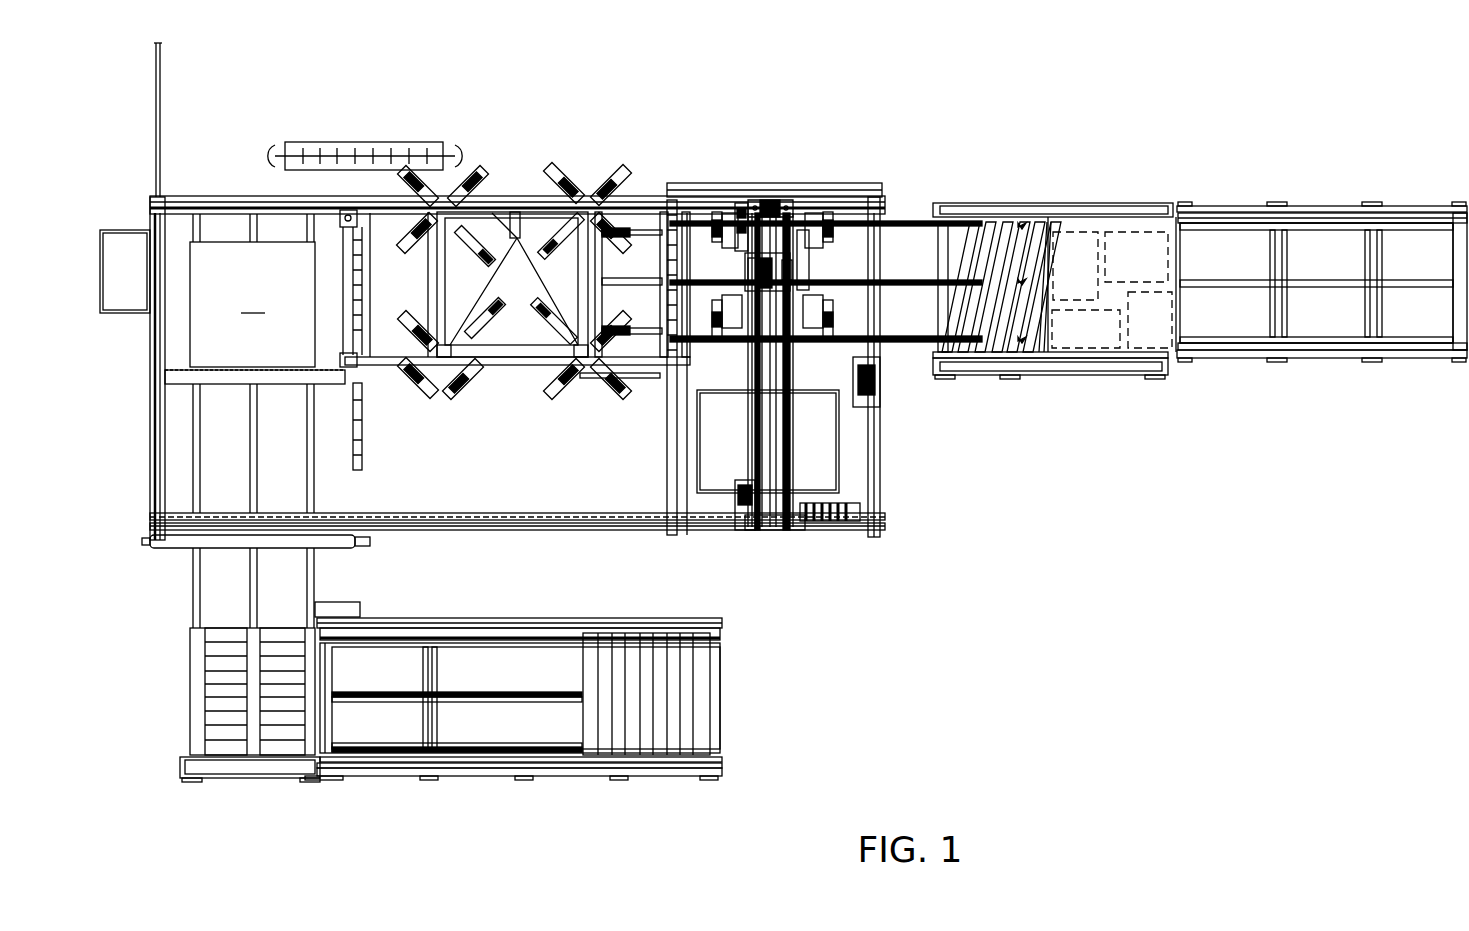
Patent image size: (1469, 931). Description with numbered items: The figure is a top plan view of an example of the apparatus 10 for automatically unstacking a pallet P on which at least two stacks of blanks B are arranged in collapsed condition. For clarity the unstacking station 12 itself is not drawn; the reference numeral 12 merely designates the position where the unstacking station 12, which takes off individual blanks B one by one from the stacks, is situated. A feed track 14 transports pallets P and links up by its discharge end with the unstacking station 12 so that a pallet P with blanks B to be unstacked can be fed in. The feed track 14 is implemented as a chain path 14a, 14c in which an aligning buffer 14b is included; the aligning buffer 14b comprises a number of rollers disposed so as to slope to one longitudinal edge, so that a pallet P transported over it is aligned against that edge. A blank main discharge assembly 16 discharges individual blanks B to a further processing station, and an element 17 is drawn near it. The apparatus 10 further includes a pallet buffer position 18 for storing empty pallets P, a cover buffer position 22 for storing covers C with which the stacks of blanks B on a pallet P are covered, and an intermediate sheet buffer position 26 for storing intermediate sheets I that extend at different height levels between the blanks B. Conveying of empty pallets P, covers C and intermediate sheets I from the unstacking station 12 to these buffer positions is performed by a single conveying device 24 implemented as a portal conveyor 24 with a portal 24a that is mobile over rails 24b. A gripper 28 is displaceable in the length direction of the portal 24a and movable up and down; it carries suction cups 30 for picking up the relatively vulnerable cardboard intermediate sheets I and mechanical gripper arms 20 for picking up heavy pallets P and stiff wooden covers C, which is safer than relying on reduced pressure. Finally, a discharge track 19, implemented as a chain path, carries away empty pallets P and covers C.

The apparatus 10 is at (1392, 163).
The unstacking station 12 is at (527, 244).
The feed track 14 is at (1152, 390).
The chain path 14a is at (1315, 222).
The aligning buffer 14b is at (1032, 203).
The chain path 14c is at (907, 347).
The blank main discharge assembly 16 is at (362, 140).
The end stop 17 is at (268, 143).
The pallet buffer position 18 is at (237, 443).
The discharge track 19 is at (391, 789).
The mechanical gripper arms 20 is at (712, 318).
The cover buffer position 22 is at (185, 340).
The conveying device 24 is at (803, 433).
The portal 24a is at (793, 462).
The rails 24b is at (210, 200).
The intermediate sheet buffer position 26 is at (847, 492).
The gripper 28 is at (820, 203).
The suction cups 30 is at (803, 235).
The blanks B is at (1125, 230).
The cover C is at (1155, 227).
The pallet P is at (688, 690).
The intermediate sheets I is at (710, 463).